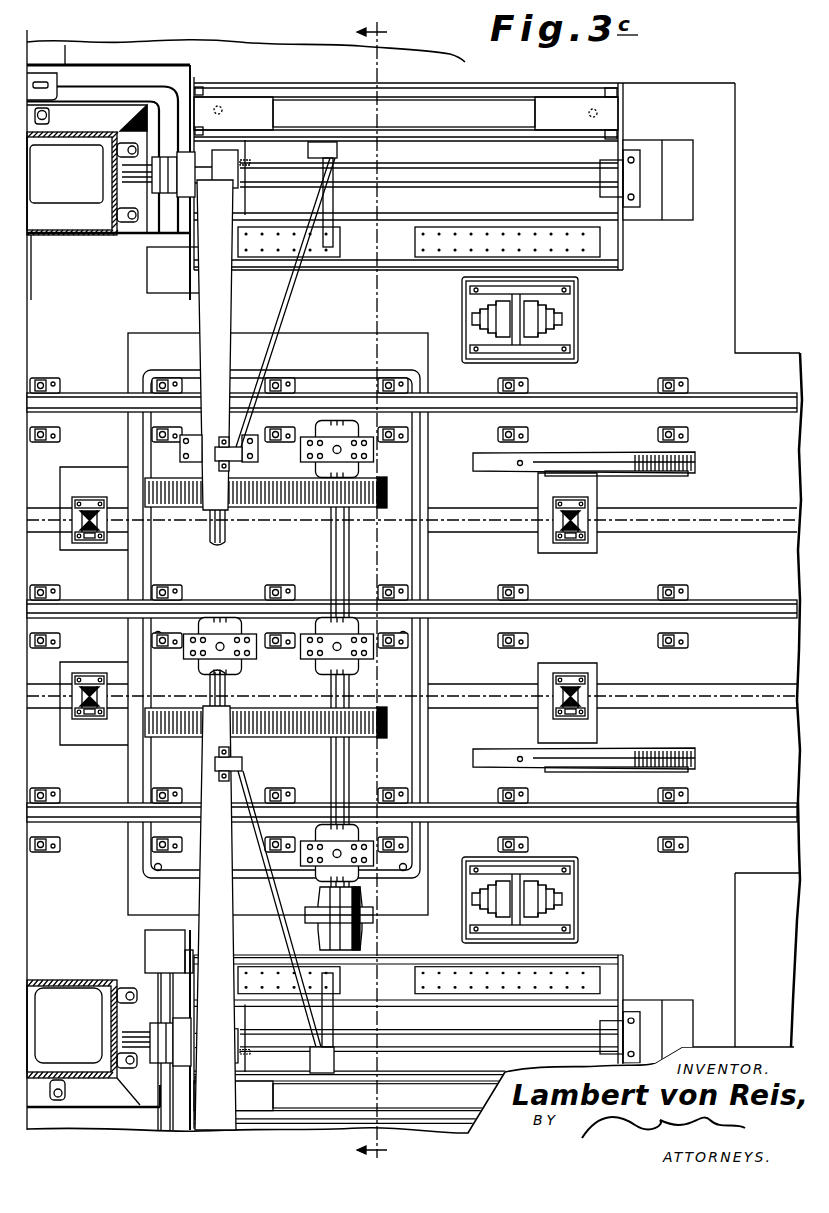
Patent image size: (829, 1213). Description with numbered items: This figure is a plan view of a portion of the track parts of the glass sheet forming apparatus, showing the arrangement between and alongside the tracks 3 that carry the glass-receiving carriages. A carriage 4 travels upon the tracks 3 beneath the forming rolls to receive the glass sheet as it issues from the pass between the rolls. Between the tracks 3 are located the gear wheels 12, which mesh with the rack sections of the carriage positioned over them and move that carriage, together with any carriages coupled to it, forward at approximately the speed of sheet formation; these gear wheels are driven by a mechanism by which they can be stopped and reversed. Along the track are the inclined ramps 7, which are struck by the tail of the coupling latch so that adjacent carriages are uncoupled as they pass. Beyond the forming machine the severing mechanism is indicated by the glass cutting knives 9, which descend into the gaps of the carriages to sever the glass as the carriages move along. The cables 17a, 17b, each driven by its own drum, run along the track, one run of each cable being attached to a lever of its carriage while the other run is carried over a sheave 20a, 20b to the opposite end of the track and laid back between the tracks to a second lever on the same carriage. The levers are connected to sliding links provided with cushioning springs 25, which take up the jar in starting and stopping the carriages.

The tracks 3 is at (748, 410).
The glass-receiving carriage 4 is at (372, 592).
The inclined ramp 7 is at (668, 472).
The glass cutting knives 9 is at (215, 313).
The gear wheels 12 is at (270, 505).
The cable 17a is at (497, 661).
The cable 17b is at (678, 528).
The sheave 20a is at (650, 667).
The sheave 20b is at (550, 532).
The cushioning springs 25 is at (545, 313).